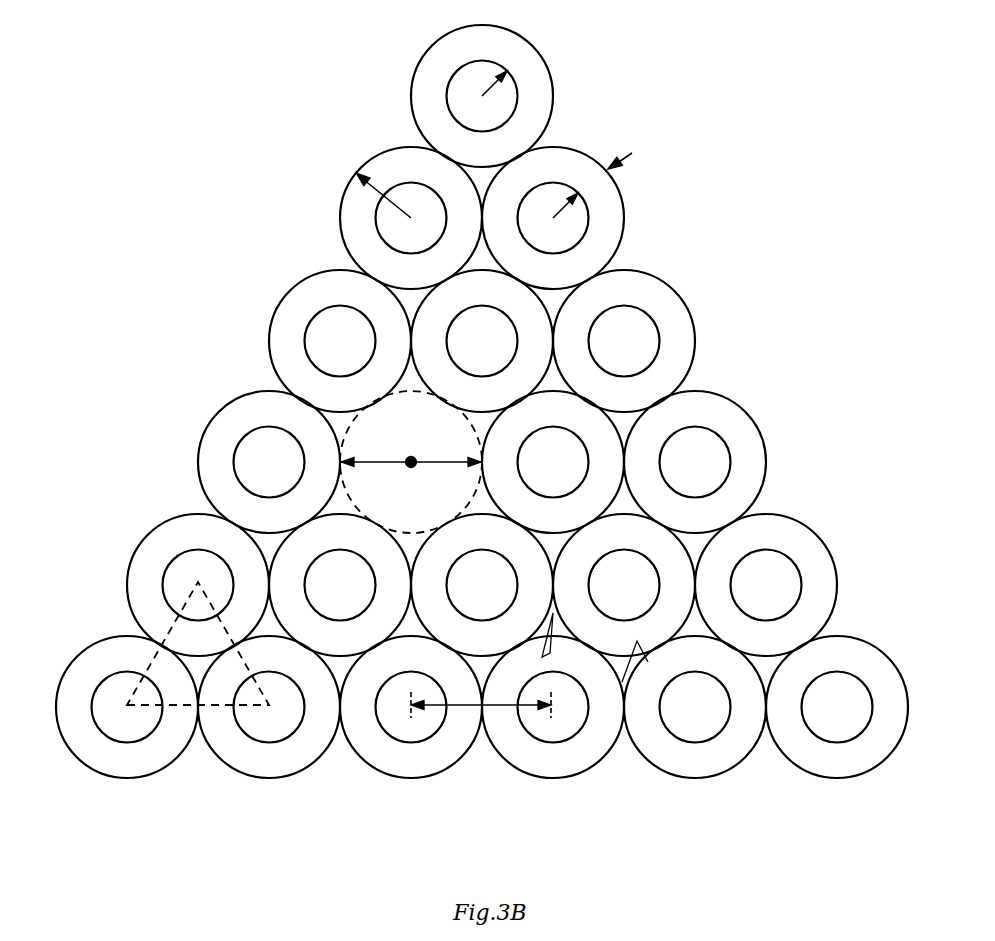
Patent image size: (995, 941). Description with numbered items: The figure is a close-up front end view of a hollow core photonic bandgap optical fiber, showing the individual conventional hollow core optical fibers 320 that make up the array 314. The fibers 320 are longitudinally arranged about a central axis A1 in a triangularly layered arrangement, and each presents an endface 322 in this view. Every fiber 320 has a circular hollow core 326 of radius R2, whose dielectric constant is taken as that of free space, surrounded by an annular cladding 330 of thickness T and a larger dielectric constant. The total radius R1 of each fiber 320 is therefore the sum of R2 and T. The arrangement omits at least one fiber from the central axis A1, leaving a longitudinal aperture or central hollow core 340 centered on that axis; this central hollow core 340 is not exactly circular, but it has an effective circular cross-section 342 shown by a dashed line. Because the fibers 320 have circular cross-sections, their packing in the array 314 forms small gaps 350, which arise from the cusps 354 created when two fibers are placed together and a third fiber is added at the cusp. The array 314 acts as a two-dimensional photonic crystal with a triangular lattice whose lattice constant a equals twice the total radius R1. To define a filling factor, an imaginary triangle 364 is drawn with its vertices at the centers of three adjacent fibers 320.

The array 314 is at (470, 389).
The conventional hollow core optical fiber 320 is at (457, 27).
The endface 322 is at (696, 430).
The hollow core 326 is at (635, 343).
The annular cladding 330 is at (663, 305).
The central hollow core 340 is at (397, 427).
The effective circular cross-section 342 is at (347, 493).
The gap 350 is at (693, 623).
The cusp 354 is at (648, 662).
The imaginary triangle 364 is at (190, 593).
The total radius R1 is at (366, 168).
The hollow core radius R2 is at (492, 86).
The cladding thickness T is at (630, 155).
The interstitial diameter D is at (400, 465).
The central axis A1 is at (415, 466).
The lattice constant a is at (500, 707).